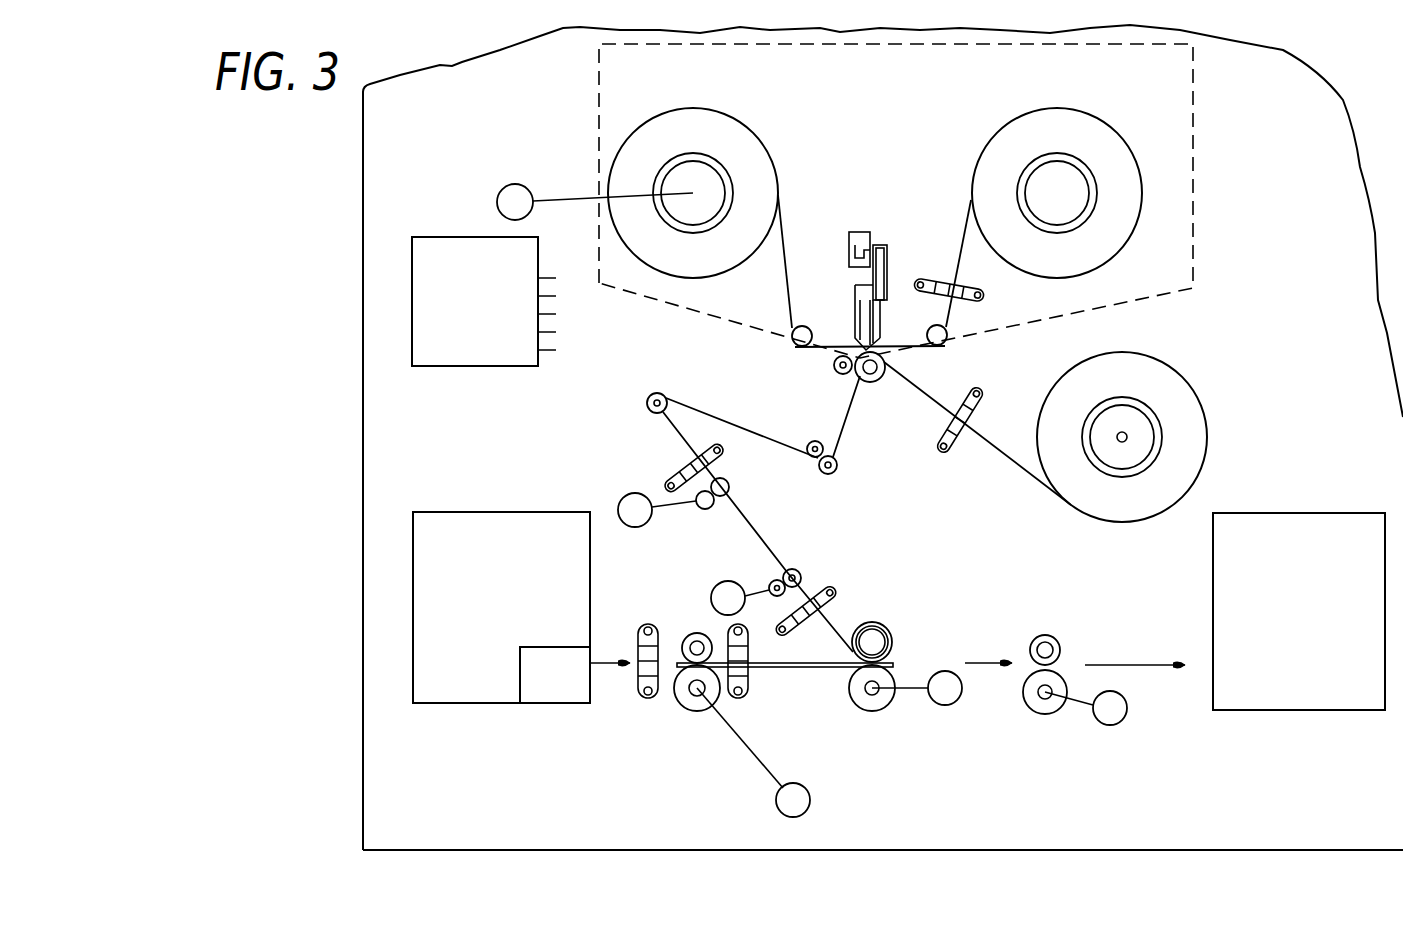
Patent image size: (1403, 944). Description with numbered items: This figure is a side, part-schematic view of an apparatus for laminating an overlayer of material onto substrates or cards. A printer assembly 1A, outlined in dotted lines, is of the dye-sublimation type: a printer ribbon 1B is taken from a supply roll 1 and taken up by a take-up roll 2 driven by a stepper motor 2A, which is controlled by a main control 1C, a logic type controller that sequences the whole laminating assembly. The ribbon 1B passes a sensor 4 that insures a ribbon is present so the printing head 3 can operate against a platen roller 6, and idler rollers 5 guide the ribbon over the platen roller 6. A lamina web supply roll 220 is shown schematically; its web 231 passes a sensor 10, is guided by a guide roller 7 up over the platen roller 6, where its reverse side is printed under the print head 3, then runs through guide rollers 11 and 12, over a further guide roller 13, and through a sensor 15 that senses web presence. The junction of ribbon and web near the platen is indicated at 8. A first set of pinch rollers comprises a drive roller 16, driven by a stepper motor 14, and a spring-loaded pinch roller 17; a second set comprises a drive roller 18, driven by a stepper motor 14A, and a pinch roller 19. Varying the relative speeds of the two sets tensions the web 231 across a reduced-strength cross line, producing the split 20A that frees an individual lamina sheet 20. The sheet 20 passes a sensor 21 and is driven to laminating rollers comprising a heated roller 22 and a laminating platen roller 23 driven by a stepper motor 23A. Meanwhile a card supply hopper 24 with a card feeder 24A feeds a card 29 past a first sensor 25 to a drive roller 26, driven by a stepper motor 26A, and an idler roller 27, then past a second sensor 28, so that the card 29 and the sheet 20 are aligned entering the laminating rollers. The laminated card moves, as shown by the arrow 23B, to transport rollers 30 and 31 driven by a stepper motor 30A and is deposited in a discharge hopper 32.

The supply roll 1 is at (1136, 147).
The printer assembly 1A is at (1195, 172).
The printer ribbon 1B is at (962, 257).
The main control 1C is at (485, 367).
The take-up roll 2 is at (753, 125).
The motor 2A is at (517, 184).
The printing head 3 is at (881, 236).
The sensor 4 is at (927, 272).
The idler rollers 5 is at (790, 336).
The platen roller 6 is at (871, 383).
The guide roller 7 is at (833, 365).
The tape junction 8 is at (918, 353).
The sensor 10 is at (943, 460).
The guide roller 11 is at (808, 440).
The guide roller 12 is at (848, 468).
The guide roller 13 is at (646, 400).
The stepper motor 14 is at (621, 498).
The stepper motor 14A is at (713, 606).
The sensor 15 is at (658, 478).
The drive roller 16 is at (696, 517).
The pinch roller 17 is at (740, 482).
The drive roller 18 is at (765, 580).
The pinch roller 19 is at (806, 574).
The lamina sheet 20 is at (769, 552).
The split or separation 20A is at (730, 532).
The sensor 21 is at (849, 587).
The heated roller 22 is at (900, 634).
The laminating platen roller 23 is at (878, 714).
The stepper motor 23A is at (951, 671).
The arrow 23B is at (983, 660).
The card supply hopper 24 is at (488, 636).
The card feeder 24A is at (545, 698).
The first sensor 25 is at (648, 704).
The drive roller 26 is at (698, 714).
The stepper motor 26A is at (811, 797).
The idler roller 27 is at (685, 629).
The second sensor 28 is at (741, 705).
The card 29 is at (792, 669).
The transport roller 30 is at (1040, 716).
The stepper motor 30A is at (1127, 711).
The transport roller 31 is at (1063, 631).
The discharge hopper 32 is at (1302, 668).
The lamina web supply roll 220 is at (1189, 371).
The web 231 is at (835, 405).